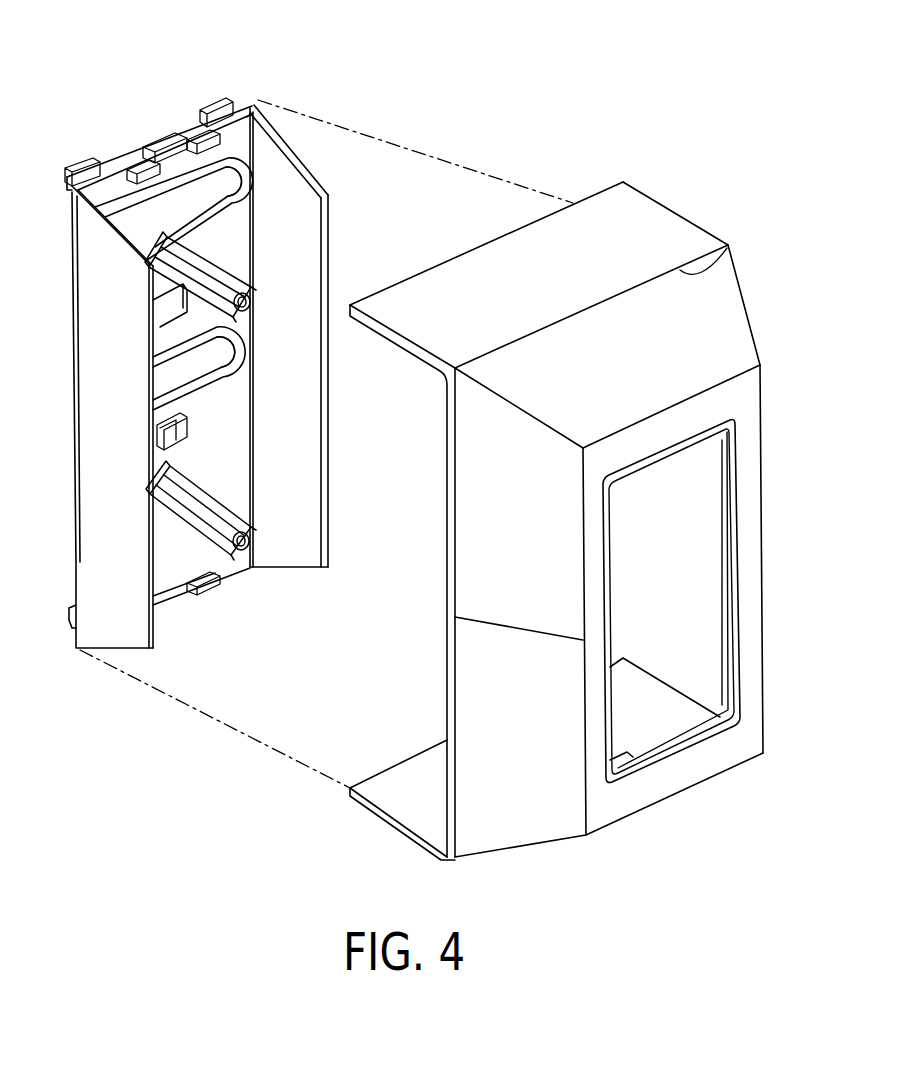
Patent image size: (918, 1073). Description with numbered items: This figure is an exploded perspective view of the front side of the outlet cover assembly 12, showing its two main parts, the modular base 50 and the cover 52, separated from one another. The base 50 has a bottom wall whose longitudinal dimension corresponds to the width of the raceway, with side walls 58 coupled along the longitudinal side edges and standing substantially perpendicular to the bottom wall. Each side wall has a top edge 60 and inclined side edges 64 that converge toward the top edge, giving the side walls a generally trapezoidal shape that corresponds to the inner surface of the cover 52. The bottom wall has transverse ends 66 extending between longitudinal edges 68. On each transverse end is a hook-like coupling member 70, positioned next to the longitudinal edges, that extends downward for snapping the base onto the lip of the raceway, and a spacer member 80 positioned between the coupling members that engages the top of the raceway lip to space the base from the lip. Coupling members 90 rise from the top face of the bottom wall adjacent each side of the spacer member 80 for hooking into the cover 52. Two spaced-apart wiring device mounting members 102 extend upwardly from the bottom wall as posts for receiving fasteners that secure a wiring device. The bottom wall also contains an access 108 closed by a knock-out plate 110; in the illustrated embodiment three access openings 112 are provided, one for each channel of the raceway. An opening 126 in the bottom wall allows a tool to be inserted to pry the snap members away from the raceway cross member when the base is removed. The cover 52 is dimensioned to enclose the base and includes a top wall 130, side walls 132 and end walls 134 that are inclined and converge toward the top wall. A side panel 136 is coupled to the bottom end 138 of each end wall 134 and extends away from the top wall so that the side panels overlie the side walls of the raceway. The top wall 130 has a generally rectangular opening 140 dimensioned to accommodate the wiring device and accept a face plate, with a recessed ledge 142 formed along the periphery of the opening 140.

The outlet cover assembly 12 is at (480, 60).
The modular base 50 is at (258, 93).
The cover 52 is at (690, 218).
The side walls 58 is at (312, 238).
The top edge 60 is at (333, 510).
The inclined side edges 64 is at (320, 179).
The transverse ends 66 is at (100, 160).
The longitudinal edges 68 is at (254, 367).
The coupling member 70 is at (78, 160).
The spacer member 80 is at (165, 135).
The coupling members 90 is at (140, 165).
The wiring device mounting members 102 is at (210, 234).
The access 108 is at (263, 134).
The knock-out plate 110 is at (133, 213).
The access openings 112 is at (244, 153).
The opening 126 is at (188, 428).
The top wall 130 is at (752, 390).
The side walls 132 is at (505, 828).
The end walls 134 is at (738, 325).
The side panel 136 is at (497, 250).
The bottom end 138 is at (690, 263).
The opening 140 is at (720, 603).
The recessed ledge 142 is at (735, 498).